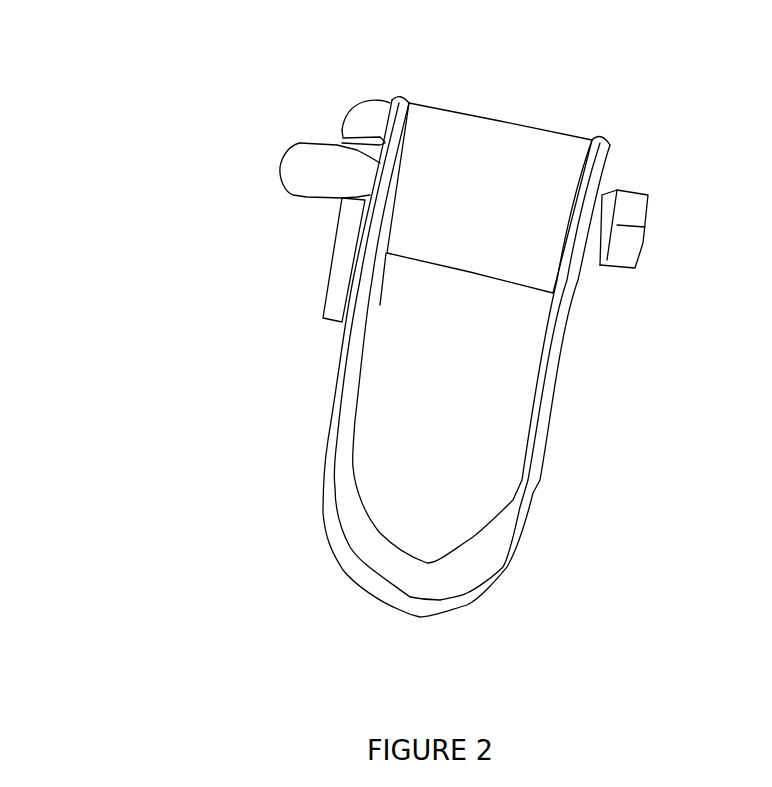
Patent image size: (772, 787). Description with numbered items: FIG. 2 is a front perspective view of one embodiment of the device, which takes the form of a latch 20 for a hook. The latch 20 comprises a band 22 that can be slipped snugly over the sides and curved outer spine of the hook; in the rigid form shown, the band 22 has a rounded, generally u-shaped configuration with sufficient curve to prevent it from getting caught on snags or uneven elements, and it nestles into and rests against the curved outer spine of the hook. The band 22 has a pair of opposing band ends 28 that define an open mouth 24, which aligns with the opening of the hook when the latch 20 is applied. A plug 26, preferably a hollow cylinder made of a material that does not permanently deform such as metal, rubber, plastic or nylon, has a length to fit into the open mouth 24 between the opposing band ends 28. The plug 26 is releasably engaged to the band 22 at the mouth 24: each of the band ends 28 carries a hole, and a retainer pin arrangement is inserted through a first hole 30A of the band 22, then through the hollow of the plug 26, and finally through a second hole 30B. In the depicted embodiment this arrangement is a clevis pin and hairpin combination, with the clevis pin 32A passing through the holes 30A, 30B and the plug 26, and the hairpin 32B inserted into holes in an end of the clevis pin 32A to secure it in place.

The latch 20 is at (140, 195).
The band 22 is at (540, 478).
The open mouth 24 is at (470, 102).
The plug 26 is at (499, 211).
The opposing band ends 28 is at (400, 97).
The first hole 30A is at (602, 195).
The second hole 30B is at (373, 173).
The clevis pin 32A is at (640, 250).
The hairpin 32B is at (337, 237).